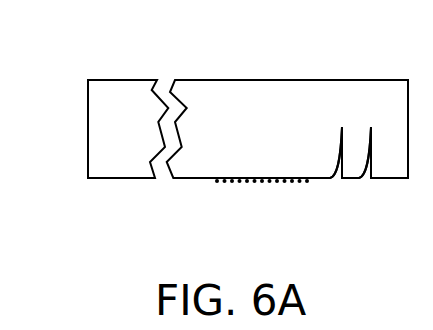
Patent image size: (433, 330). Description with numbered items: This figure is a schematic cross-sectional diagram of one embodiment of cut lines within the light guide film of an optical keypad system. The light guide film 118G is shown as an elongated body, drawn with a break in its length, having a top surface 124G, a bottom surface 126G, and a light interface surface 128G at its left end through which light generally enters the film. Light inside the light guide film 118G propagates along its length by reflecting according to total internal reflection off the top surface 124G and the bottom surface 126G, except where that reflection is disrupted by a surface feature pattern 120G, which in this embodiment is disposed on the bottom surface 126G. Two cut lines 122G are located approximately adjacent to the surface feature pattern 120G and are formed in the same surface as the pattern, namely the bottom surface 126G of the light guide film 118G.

The light guide film 118G is at (128, 80).
The surface feature pattern 120G is at (240, 183).
The cut lines 122G is at (339, 182).
The top surface 124G is at (104, 80).
The bottom surface 126G is at (104, 178).
The light interface surface 128G is at (88, 105).